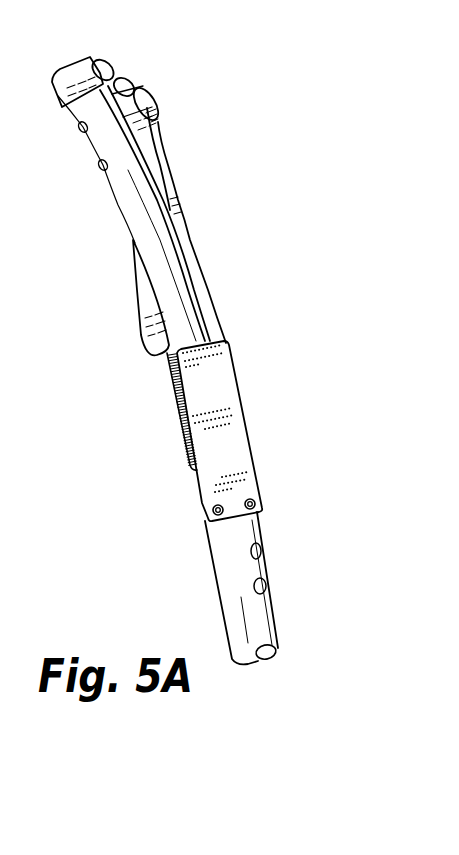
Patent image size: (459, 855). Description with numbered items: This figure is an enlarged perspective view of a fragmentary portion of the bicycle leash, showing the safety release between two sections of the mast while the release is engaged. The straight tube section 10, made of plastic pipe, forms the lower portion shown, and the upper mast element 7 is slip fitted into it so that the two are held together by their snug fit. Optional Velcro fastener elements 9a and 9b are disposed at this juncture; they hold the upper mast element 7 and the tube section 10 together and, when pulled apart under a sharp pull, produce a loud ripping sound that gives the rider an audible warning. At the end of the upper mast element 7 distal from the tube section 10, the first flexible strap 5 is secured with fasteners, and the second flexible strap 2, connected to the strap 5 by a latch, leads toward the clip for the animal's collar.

The first flexible strap 5 is at (82, 62).
The upper mast element 7 is at (125, 200).
The second flexible strap 2 is at (173, 193).
The Velcro fastener element 9b is at (225, 387).
The Velcro fastener element 9a is at (173, 410).
The straight tube section 10 is at (220, 578).